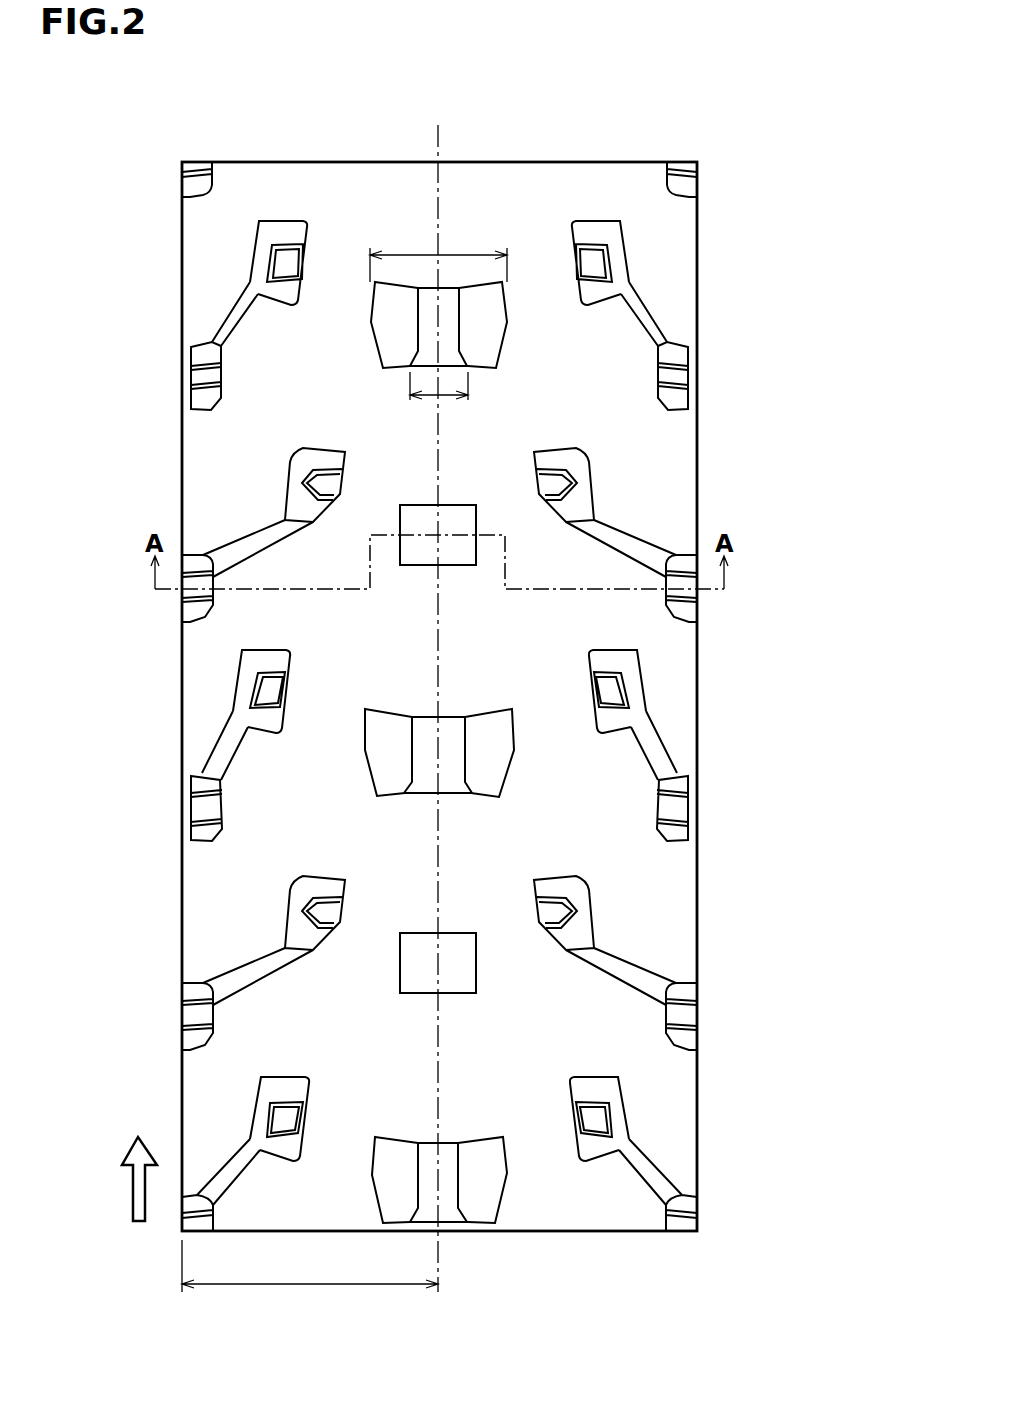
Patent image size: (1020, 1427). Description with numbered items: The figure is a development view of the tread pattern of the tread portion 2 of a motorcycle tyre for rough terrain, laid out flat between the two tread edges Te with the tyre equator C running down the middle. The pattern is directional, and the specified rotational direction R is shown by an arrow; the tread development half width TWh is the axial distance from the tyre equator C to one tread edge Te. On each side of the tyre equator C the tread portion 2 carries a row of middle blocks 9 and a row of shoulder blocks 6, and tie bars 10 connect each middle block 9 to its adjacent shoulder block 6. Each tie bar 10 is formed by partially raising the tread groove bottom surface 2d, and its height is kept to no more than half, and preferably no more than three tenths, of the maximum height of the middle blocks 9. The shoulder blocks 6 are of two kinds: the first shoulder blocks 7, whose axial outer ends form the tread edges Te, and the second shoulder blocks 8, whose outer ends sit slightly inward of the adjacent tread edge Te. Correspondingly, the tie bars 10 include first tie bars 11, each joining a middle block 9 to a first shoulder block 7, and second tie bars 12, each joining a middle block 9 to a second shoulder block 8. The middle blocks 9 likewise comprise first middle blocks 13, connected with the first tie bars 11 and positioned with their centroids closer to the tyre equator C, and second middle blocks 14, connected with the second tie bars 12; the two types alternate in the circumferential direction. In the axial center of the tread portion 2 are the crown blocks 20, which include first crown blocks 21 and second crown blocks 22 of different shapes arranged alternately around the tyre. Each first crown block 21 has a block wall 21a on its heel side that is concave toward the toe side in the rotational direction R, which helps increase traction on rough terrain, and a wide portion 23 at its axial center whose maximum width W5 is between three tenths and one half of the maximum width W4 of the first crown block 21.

The tread portion 2 is at (388, 145).
The tread groove bottom surface 2d is at (332, 208).
The tread edge Te is at (182, 186).
The tyre equator C is at (439, 700).
The maximum width of first crown block W4 is at (465, 254).
The maximum width of wide portion W5 is at (440, 396).
The middle block 9 is at (277, 257).
The tie bar 10 is at (223, 315).
The first tie bar 11 is at (639, 536).
The second tie bar 12 is at (220, 745).
The first middle block 13 is at (293, 907).
The second middle block 14 is at (256, 686).
The shoulder block 6 is at (188, 603).
The first shoulder block 7 is at (689, 604).
The second shoulder block 8 is at (684, 803).
The crown block 20 is at (497, 318).
The first crown block 21 is at (499, 748).
The block wall 21a is at (481, 1126).
The second crown block 22 is at (466, 961).
The wide portion 23 is at (462, 338).
The rotational direction R is at (139, 1165).
The tread development half width TWh is at (310, 1279).